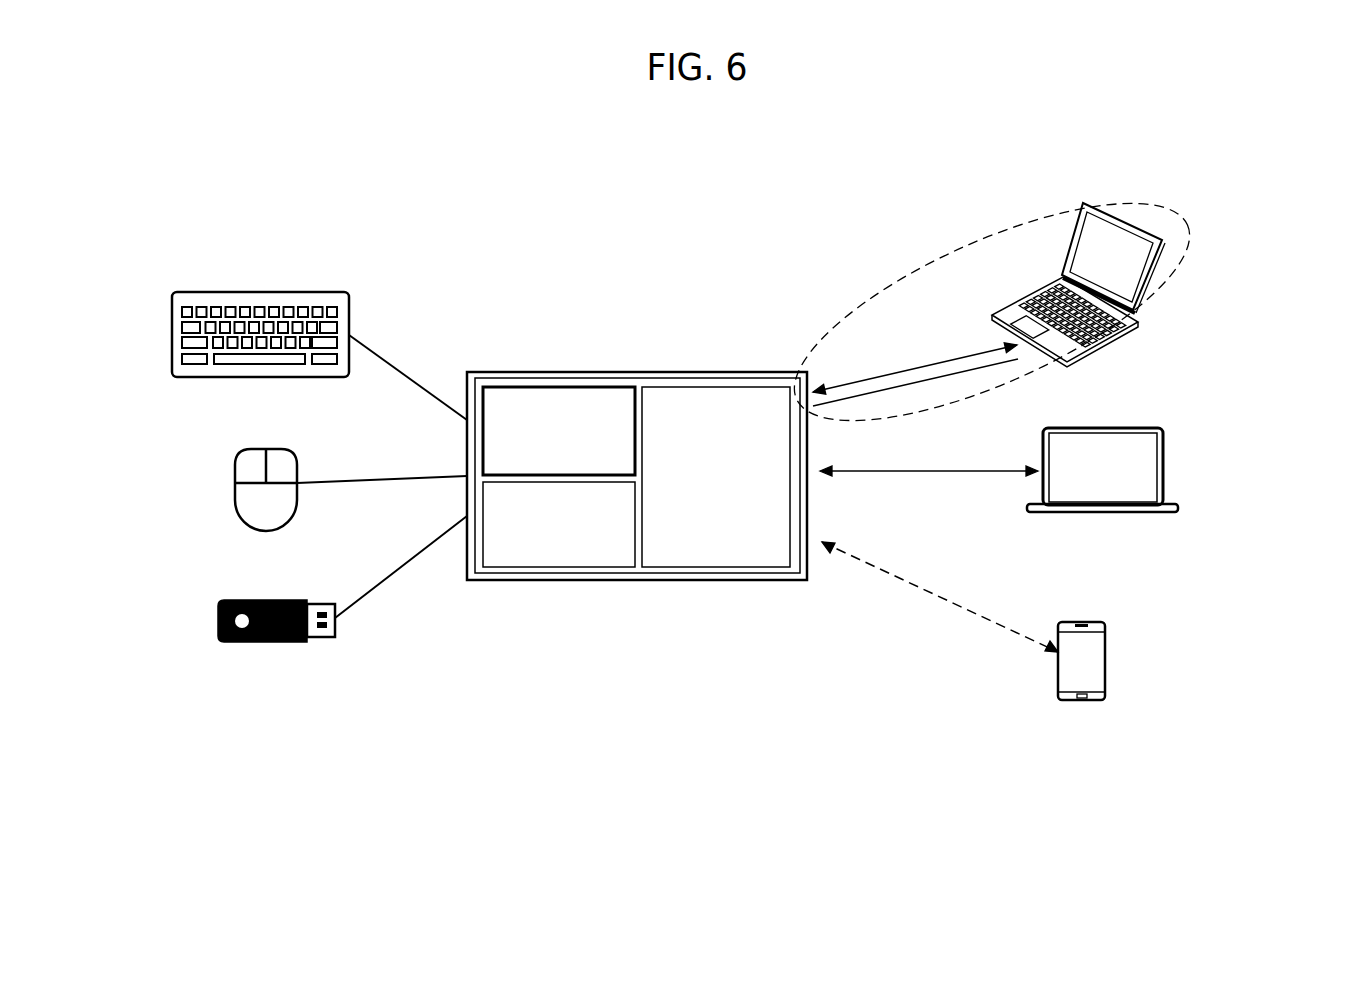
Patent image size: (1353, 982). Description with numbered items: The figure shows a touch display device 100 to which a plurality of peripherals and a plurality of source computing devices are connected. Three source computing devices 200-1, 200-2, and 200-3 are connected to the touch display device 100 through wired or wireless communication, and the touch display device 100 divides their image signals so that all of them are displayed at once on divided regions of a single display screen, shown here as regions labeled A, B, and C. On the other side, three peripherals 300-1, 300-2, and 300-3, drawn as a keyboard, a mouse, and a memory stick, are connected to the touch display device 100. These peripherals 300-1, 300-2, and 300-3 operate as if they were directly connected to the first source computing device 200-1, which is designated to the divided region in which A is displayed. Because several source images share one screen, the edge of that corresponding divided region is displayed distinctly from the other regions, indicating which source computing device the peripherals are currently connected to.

The touch display device 100 is at (680, 372).
The first peripheral 300-1 is at (264, 292).
The second peripheral 300-2 is at (283, 451).
The third peripheral 300-3 is at (272, 598).
The first source computing device 200-1 is at (1118, 222).
The second source computing device 200-2 is at (1107, 428).
The third source computing device 200-3 is at (1083, 623).